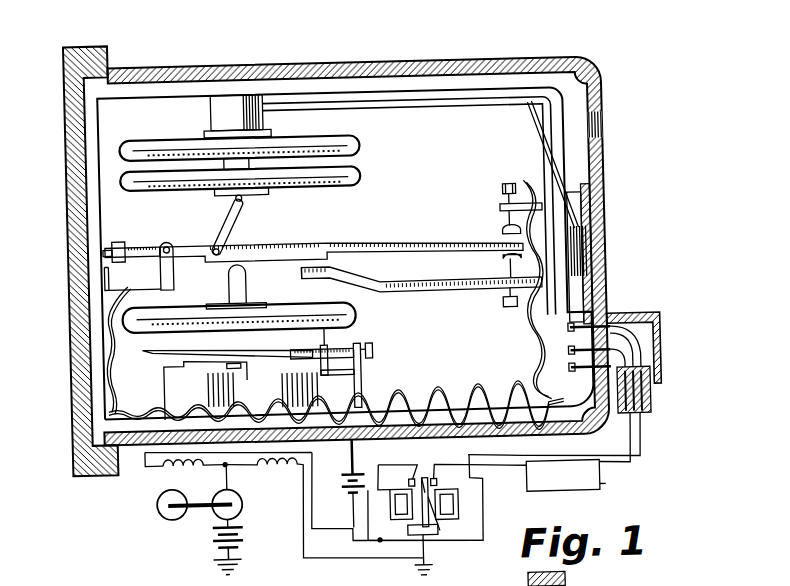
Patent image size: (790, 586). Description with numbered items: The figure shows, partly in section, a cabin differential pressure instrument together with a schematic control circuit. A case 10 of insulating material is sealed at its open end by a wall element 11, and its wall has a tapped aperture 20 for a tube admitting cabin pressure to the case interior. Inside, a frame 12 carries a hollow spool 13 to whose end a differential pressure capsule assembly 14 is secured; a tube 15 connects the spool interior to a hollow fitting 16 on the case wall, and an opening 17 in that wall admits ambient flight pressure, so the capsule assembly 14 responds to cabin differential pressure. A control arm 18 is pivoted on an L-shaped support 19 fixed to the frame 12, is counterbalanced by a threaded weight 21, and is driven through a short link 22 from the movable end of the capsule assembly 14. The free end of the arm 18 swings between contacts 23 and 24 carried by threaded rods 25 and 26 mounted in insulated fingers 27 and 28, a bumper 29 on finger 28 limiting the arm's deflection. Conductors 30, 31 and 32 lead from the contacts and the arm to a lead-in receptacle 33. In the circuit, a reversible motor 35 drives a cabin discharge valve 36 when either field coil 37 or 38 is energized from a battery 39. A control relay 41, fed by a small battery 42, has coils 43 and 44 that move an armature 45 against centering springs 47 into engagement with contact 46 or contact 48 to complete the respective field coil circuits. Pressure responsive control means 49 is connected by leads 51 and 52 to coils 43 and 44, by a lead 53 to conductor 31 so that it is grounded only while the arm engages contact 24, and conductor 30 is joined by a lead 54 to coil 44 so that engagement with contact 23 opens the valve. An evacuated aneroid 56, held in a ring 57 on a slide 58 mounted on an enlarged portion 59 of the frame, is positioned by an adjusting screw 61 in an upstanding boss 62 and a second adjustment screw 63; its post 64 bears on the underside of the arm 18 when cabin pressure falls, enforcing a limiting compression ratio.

The case 10 is at (323, 62).
The wall element 11 is at (65, 191).
The frame 12 is at (119, 91).
The hollow spool 13 is at (271, 121).
The differential pressure capsule assembly 14 is at (376, 162).
The tube 15 is at (456, 113).
The hollow fitting 16 is at (583, 204).
The opening 17 is at (604, 232).
The control arm 18 is at (398, 244).
The L-shaped support 19 is at (171, 276).
The tapped aperture 20 is at (607, 124).
The weight 21 is at (130, 237).
The link 22 is at (236, 226).
The contact 23 is at (503, 234).
The contact 24 is at (502, 259).
The threaded rod 25 is at (501, 200).
The threaded rod 26 is at (502, 304).
The finger 27 is at (524, 200).
The finger 28 is at (417, 292).
The bumper 29 is at (324, 278).
The conductor 30 is at (518, 340).
The conductor 31 is at (519, 377).
The conductor 32 is at (118, 405).
The lead-in receptacle 33 is at (652, 403).
The motor 35 is at (237, 503).
The valve 36 is at (156, 514).
The field coil 37 is at (160, 466).
The field coil 38 is at (253, 465).
The battery 39 is at (233, 538).
The control relay 41 is at (423, 538).
The battery 42 is at (334, 482).
The relay coil 43 is at (386, 506).
The relay coil 44 is at (454, 505).
The armature 45 is at (433, 532).
The contact 46 is at (407, 470).
The centering springs 47 is at (403, 513).
The contact 48 is at (429, 472).
The control means 49 is at (579, 493).
The lead 51 is at (521, 487).
The lead 52 is at (492, 469).
The lead 53 is at (640, 466).
The lead 54 is at (610, 467).
The aneroid 56 is at (282, 305).
The ring 57 is at (148, 348).
The slide 58 is at (177, 363).
The enlarged portion 59 is at (313, 389).
The adjusting screw 61 is at (370, 352).
The boss 62 is at (354, 344).
The adjustment screw 63 is at (237, 368).
The post 64 is at (249, 279).